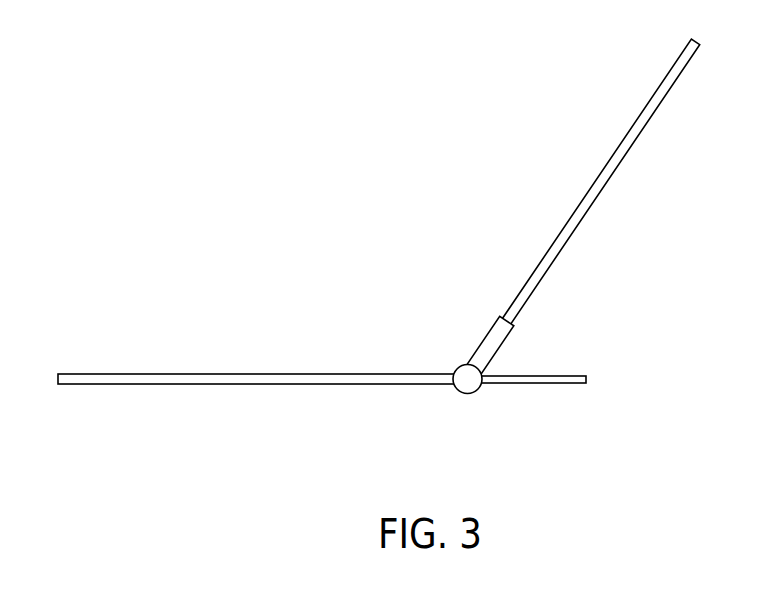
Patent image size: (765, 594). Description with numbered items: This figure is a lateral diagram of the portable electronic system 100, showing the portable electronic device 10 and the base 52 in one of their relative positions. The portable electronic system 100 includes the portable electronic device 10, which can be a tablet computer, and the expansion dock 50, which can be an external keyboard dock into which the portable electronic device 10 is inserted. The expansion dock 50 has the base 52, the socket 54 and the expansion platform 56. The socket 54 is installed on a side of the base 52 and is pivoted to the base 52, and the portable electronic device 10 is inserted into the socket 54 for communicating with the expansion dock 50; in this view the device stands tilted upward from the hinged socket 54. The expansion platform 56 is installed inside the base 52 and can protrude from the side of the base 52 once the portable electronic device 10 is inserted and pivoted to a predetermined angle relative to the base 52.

The portable electronic system 100 is at (339, 102).
The portable electronic device 10 is at (662, 146).
The expansion dock 50 is at (616, 458).
The base 52 is at (327, 385).
The socket 54 is at (503, 330).
The expansion platform 56 is at (505, 385).